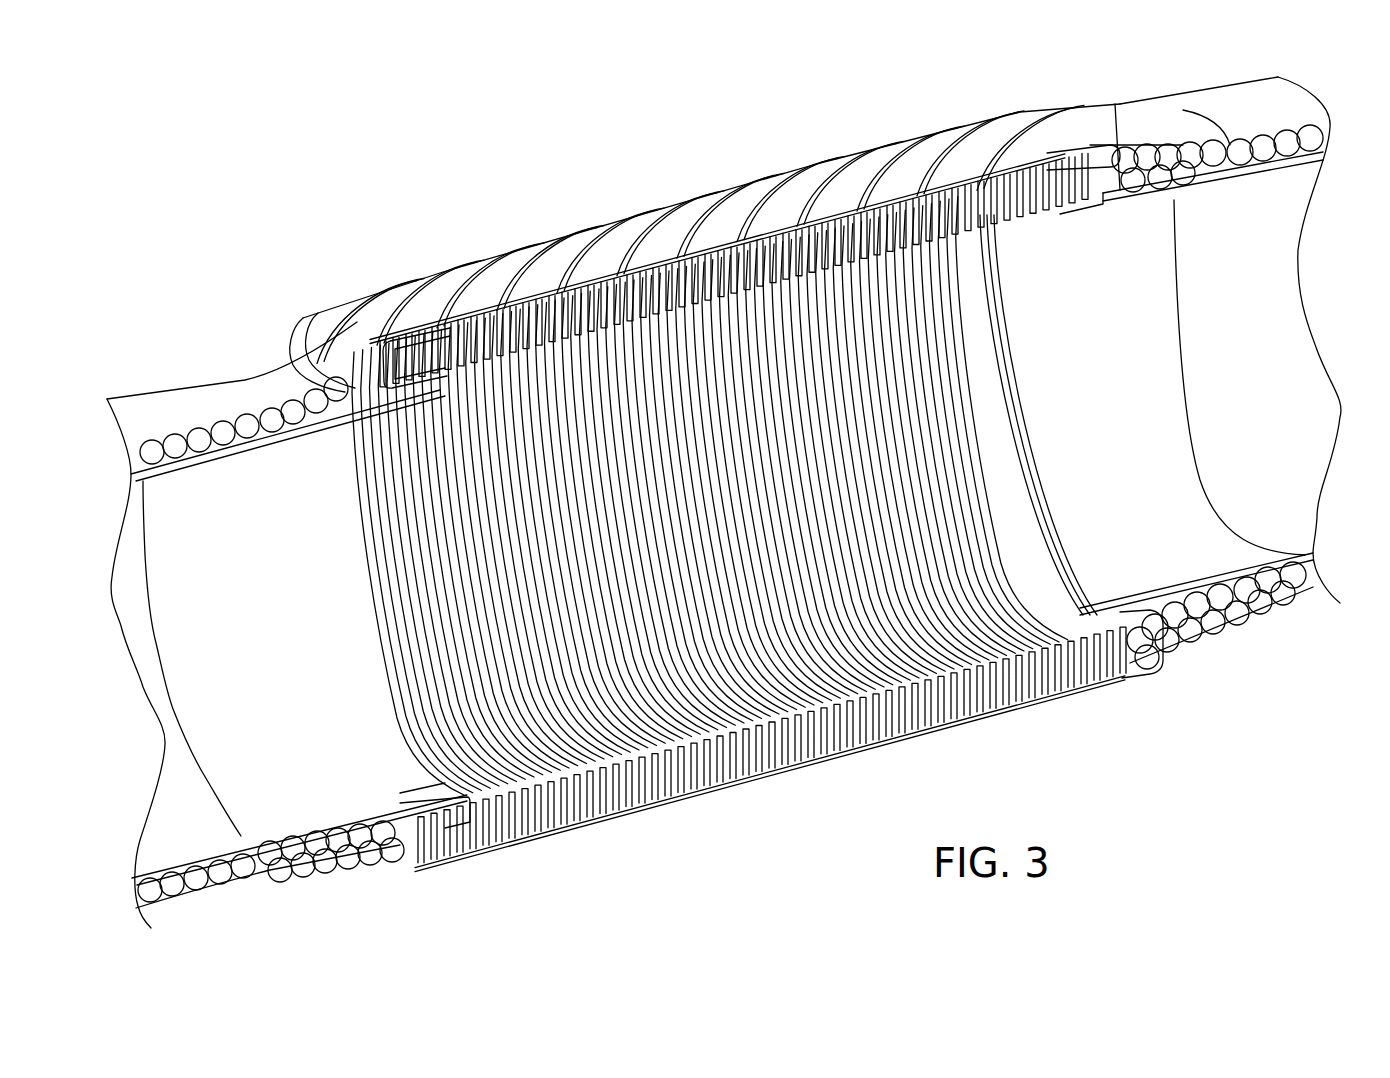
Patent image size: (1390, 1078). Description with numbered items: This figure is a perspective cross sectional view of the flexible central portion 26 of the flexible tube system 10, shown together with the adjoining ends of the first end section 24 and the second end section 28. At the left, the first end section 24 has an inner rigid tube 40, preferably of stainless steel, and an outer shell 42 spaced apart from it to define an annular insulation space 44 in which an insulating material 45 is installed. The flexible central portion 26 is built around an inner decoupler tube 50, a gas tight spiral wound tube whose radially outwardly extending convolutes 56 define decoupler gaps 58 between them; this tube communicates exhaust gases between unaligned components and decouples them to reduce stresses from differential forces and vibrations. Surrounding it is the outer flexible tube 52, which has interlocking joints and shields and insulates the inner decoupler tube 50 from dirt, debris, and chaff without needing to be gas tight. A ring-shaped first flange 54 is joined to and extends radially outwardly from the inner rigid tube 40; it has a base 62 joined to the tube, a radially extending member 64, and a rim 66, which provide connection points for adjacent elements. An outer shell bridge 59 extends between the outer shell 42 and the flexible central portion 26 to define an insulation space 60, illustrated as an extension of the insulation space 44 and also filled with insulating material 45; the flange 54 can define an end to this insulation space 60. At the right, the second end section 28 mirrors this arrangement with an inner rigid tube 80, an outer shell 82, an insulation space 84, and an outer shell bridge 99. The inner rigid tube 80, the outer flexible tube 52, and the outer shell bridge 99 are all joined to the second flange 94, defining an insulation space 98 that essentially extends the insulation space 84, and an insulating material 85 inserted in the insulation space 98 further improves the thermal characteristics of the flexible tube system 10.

The flexible tube system 10 is at (471, 140).
The first end section 24 is at (148, 260).
The flexible central portion 26 is at (728, 822).
The second end section 28 is at (1226, 748).
The inner rigid tube 40 is at (273, 647).
The outer shell 42 is at (148, 400).
The insulation space 44 is at (205, 425).
The insulating material 45 is at (305, 405).
The inner decoupler tube 50 is at (905, 500).
The outer flexible tube 52 is at (540, 267).
The first flange 54 is at (412, 840).
The convolutes 56 is at (709, 243).
The decoupler gaps 58 is at (797, 233).
The outer shell bridge 59 is at (280, 342).
The insulation space 60 is at (337, 355).
The base 62 is at (357, 380).
The radially extending member 64 is at (368, 357).
The rim 66 is at (416, 324).
The inner rigid tube 80 is at (1123, 398).
The outer shell 82 is at (1253, 103).
The insulation space 84 is at (1295, 127).
The insulating material 85 is at (1197, 170).
The second flange 94 is at (1108, 150).
The insulation space 98 is at (1108, 165).
The outer shell bridge 99 is at (1145, 128).